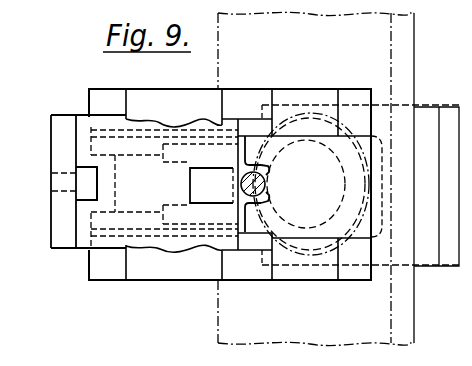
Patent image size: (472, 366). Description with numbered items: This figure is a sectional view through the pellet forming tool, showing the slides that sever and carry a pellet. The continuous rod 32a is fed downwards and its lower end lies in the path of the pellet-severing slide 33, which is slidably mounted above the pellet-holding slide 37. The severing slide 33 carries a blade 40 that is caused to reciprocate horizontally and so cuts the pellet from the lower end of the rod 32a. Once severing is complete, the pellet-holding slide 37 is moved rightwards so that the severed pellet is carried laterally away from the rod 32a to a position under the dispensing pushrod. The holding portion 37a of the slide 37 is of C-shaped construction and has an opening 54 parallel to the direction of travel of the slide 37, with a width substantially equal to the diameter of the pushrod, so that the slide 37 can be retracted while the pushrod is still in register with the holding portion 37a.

The pellet-severing slide 33 is at (63, 127).
The holding portion 37a is at (272, 167).
The blade 40 is at (210, 184).
The pellet-holding slide 37 is at (226, 217).
The continuous rod 32a is at (258, 194).
The opening 54 is at (275, 180).